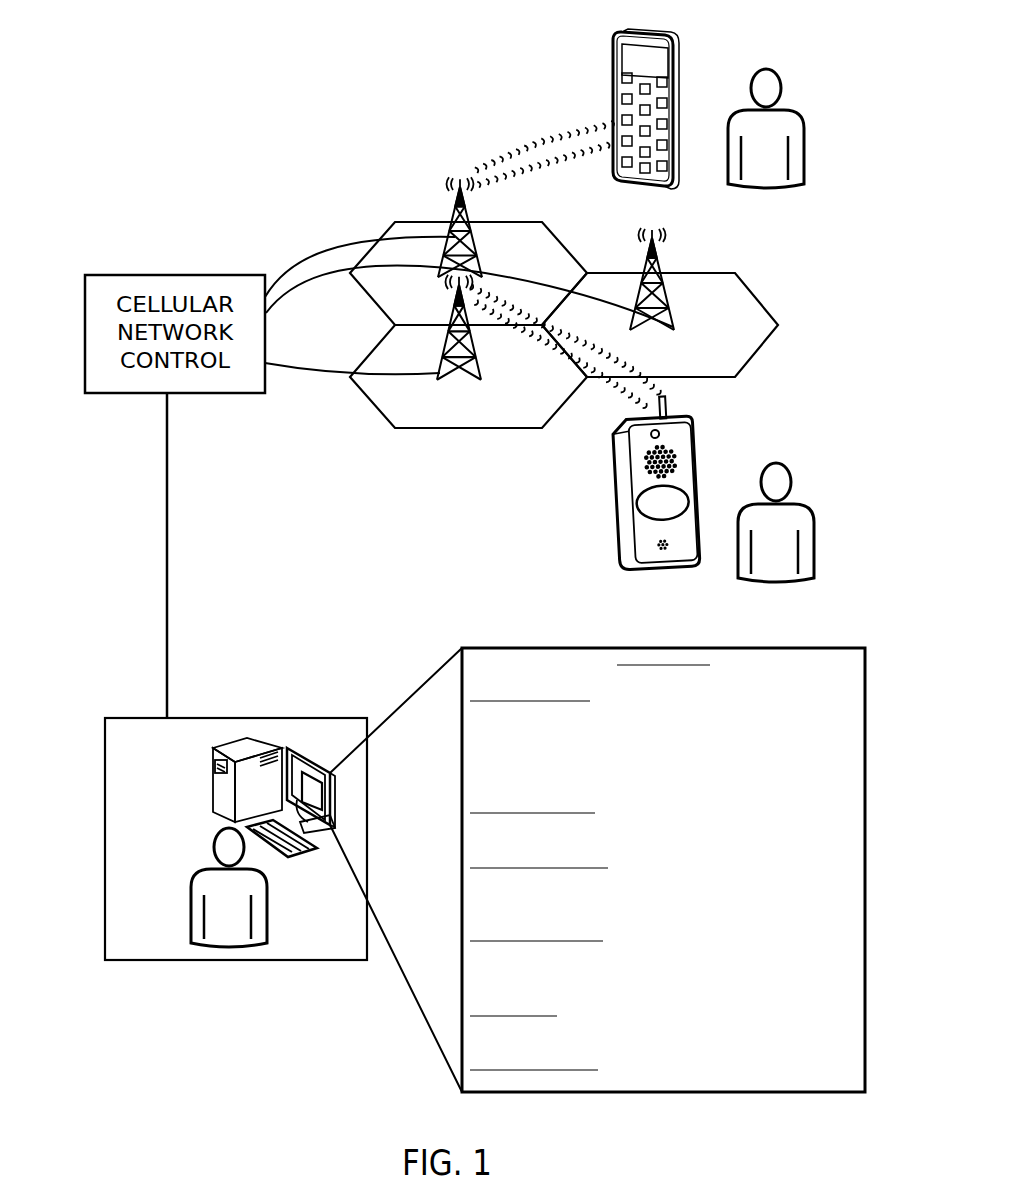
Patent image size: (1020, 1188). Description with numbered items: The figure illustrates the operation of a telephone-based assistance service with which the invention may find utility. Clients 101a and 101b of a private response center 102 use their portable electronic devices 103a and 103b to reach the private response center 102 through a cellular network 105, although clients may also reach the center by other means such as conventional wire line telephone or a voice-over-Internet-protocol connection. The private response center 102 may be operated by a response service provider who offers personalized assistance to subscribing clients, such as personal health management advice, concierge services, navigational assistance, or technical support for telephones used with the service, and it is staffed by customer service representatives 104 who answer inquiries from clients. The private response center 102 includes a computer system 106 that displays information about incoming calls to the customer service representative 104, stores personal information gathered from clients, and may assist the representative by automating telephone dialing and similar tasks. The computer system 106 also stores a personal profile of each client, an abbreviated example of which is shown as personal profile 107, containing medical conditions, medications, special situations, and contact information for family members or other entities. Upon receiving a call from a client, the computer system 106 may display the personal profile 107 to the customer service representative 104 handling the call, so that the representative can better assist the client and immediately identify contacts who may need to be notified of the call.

The client 101a is at (775, 127).
The client 101b is at (798, 523).
The private response center 102 is at (127, 730).
The portable electronic device 103a is at (610, 72).
The portable electronic device 103b is at (618, 508).
The customer service representative 104 is at (200, 890).
The cellular network 105 is at (316, 230).
The computer system 106 is at (255, 748).
The personal profile 107 is at (508, 660).